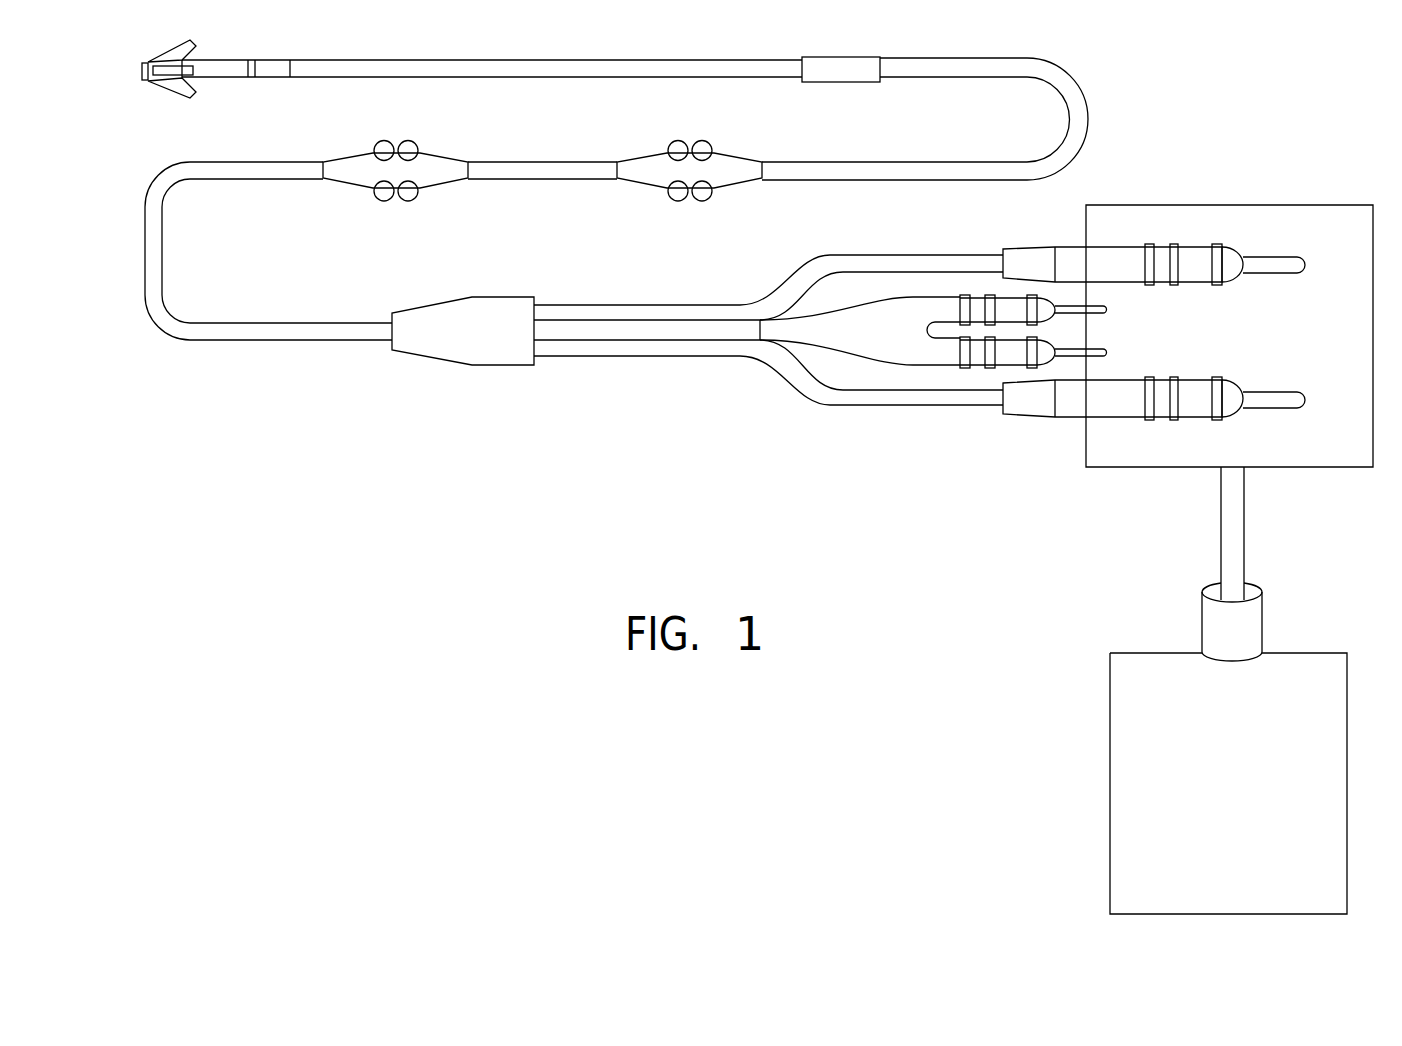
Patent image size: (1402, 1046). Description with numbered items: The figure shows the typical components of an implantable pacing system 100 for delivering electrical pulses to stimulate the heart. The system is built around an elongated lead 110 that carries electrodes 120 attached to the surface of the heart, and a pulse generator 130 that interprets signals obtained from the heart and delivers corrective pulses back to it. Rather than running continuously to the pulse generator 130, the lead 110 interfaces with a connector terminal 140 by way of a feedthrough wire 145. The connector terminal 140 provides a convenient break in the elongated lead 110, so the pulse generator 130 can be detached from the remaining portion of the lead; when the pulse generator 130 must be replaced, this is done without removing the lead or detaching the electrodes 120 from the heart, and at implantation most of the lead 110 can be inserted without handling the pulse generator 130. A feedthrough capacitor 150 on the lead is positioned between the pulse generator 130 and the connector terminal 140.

The pacing system 100 is at (446, 433).
The elongated lead 110 is at (264, 341).
The electrodes 120 is at (142, 64).
The pulse generator 130 is at (1108, 794).
The connector terminal 140 is at (1323, 204).
The feedthrough wire 145 is at (1245, 507).
The feedthrough capacitor 150 is at (1201, 617).